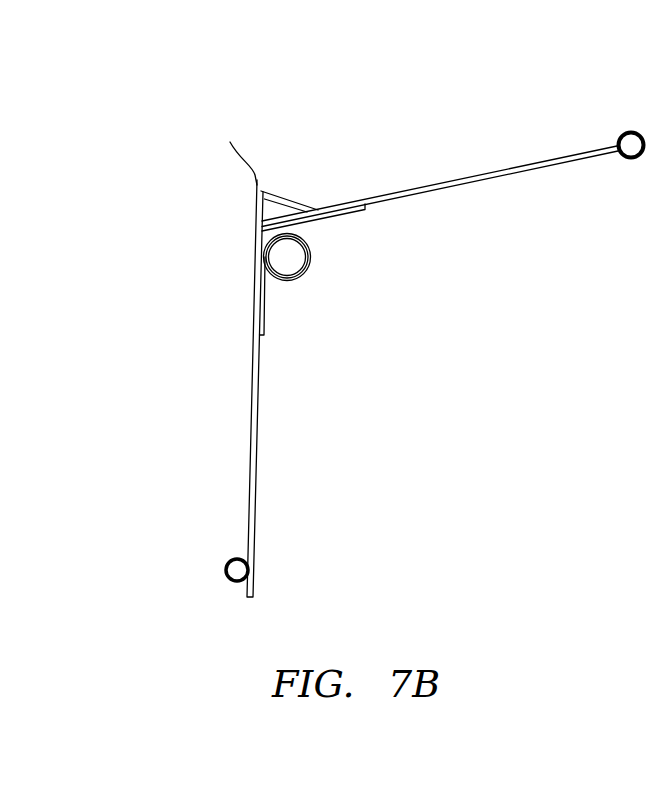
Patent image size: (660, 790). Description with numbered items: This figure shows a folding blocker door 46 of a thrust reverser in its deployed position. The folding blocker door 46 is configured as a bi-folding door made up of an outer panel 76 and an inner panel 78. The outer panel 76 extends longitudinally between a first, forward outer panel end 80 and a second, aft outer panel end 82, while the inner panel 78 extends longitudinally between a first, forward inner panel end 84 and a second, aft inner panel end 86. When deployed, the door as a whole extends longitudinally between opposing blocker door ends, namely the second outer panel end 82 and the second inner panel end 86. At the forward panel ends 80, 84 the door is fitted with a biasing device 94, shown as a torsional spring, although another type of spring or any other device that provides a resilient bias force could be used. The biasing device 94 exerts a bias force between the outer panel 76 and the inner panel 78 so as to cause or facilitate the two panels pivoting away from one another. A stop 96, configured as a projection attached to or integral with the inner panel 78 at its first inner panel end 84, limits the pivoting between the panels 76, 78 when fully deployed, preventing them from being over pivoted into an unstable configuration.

The folding blocker door 46 is at (147, 126).
The outer panel 76 is at (426, 180).
The inner panel 78 is at (243, 367).
The first outer panel end 80 is at (265, 233).
The second outer panel end 82 is at (631, 130).
The first inner panel end 84 is at (235, 148).
The second inner panel end 86 is at (224, 569).
The biasing device 94 is at (318, 289).
The stop 96 is at (303, 182).